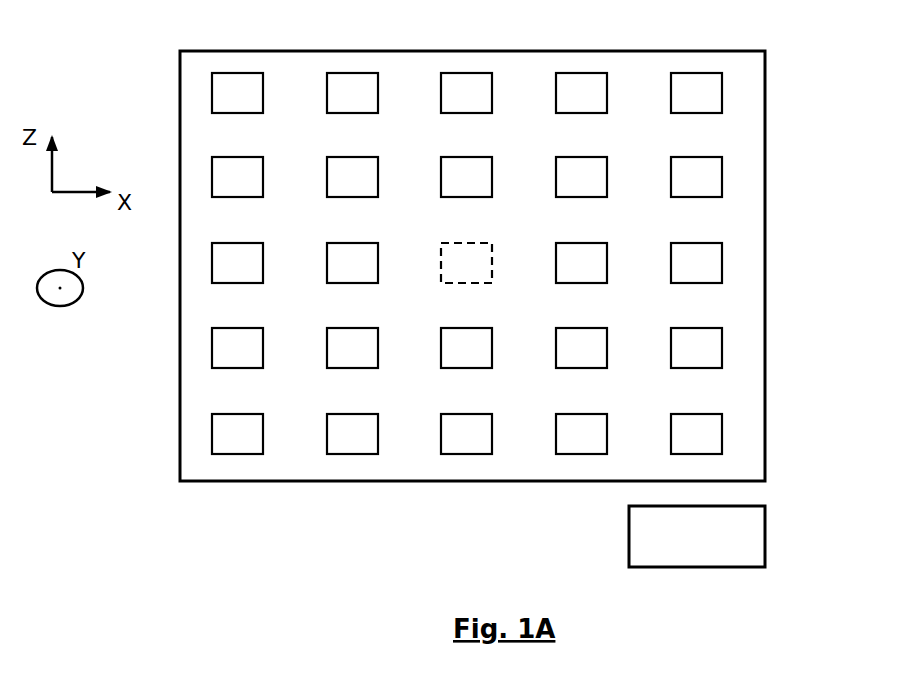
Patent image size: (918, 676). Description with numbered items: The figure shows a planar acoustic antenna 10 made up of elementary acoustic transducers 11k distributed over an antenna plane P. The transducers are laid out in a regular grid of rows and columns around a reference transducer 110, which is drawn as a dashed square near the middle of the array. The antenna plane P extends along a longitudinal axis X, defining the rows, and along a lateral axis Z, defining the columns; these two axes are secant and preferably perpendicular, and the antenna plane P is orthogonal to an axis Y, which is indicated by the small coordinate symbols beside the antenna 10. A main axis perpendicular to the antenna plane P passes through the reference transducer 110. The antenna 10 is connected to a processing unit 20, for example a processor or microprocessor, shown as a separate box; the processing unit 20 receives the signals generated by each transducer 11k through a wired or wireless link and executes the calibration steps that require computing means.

The planar acoustic antenna 10 is at (158, 82).
The antenna plane P is at (292, 67).
The elementary acoustic transducer 11k is at (338, 259).
The reference transducer 110 is at (458, 260).
The processing unit 20 is at (622, 554).